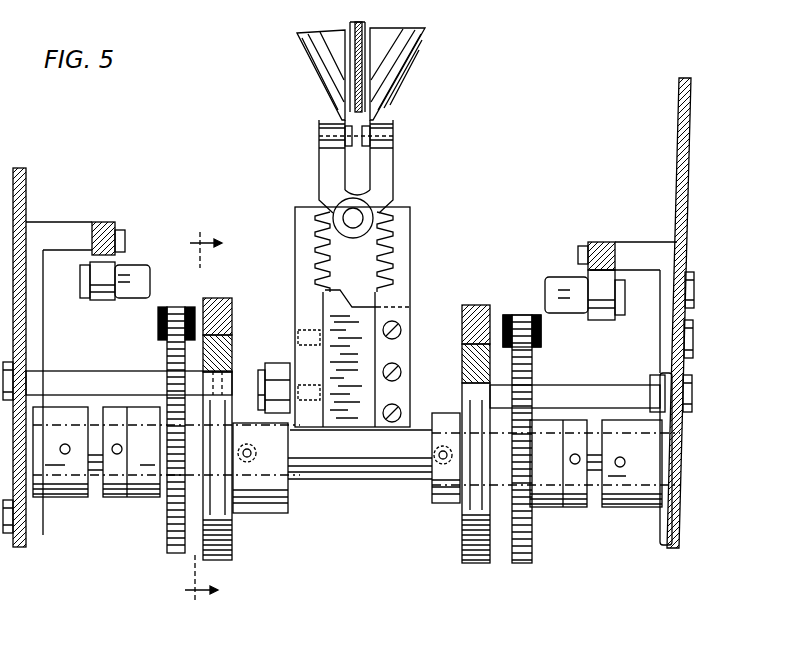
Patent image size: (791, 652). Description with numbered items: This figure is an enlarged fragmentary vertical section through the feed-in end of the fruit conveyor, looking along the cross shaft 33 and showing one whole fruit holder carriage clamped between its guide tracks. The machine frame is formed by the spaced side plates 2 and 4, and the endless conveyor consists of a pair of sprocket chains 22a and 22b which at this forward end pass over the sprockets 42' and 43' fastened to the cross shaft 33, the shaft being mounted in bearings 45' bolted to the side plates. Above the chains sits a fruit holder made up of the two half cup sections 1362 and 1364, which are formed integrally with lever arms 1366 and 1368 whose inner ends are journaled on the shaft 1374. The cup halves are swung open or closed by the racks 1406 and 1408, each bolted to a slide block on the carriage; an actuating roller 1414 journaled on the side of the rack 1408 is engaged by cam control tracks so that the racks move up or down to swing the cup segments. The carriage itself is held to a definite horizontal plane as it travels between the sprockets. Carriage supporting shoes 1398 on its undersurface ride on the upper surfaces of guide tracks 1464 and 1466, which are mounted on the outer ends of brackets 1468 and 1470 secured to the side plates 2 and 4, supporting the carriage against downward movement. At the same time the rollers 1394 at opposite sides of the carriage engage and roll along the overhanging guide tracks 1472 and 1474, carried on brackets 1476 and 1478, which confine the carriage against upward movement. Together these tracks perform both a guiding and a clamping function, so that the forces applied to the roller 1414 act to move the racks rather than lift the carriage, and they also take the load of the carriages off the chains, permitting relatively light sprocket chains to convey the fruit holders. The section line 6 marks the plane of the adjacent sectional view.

The side plate 2 is at (27, 172).
The side plate 4 is at (679, 143).
The section line 6- 6 is at (203, 417).
The sprocket chain 22a is at (176, 308).
The sprocket chain 22b is at (537, 345).
The cross shaft 33 is at (330, 480).
The sprocket 42' is at (126, 478).
The sprocket 43' is at (552, 439).
The bearing 45' is at (347, 484).
The cup section 1362 is at (302, 62).
The cup section 1364 is at (422, 66).
The lever arm 1366 is at (319, 178).
The lever arm 1368 is at (390, 178).
The shaft 1374 is at (397, 223).
The roller 1394 is at (115, 310).
The carriage supporting shoe 1398 is at (225, 298).
The rack 1406 is at (307, 222).
The rack 1408 is at (428, 252).
The actuating roller 1414 is at (277, 370).
The guide track 1464 is at (233, 342).
The guide track 1466 is at (462, 360).
The bracket 1468 is at (88, 371).
The bracket 1470 is at (583, 390).
The overhanging guide track 1472 is at (98, 223).
The overhanging guide track 1474 is at (598, 243).
The bracket 1476 is at (42, 235).
The bracket 1478 is at (643, 246).